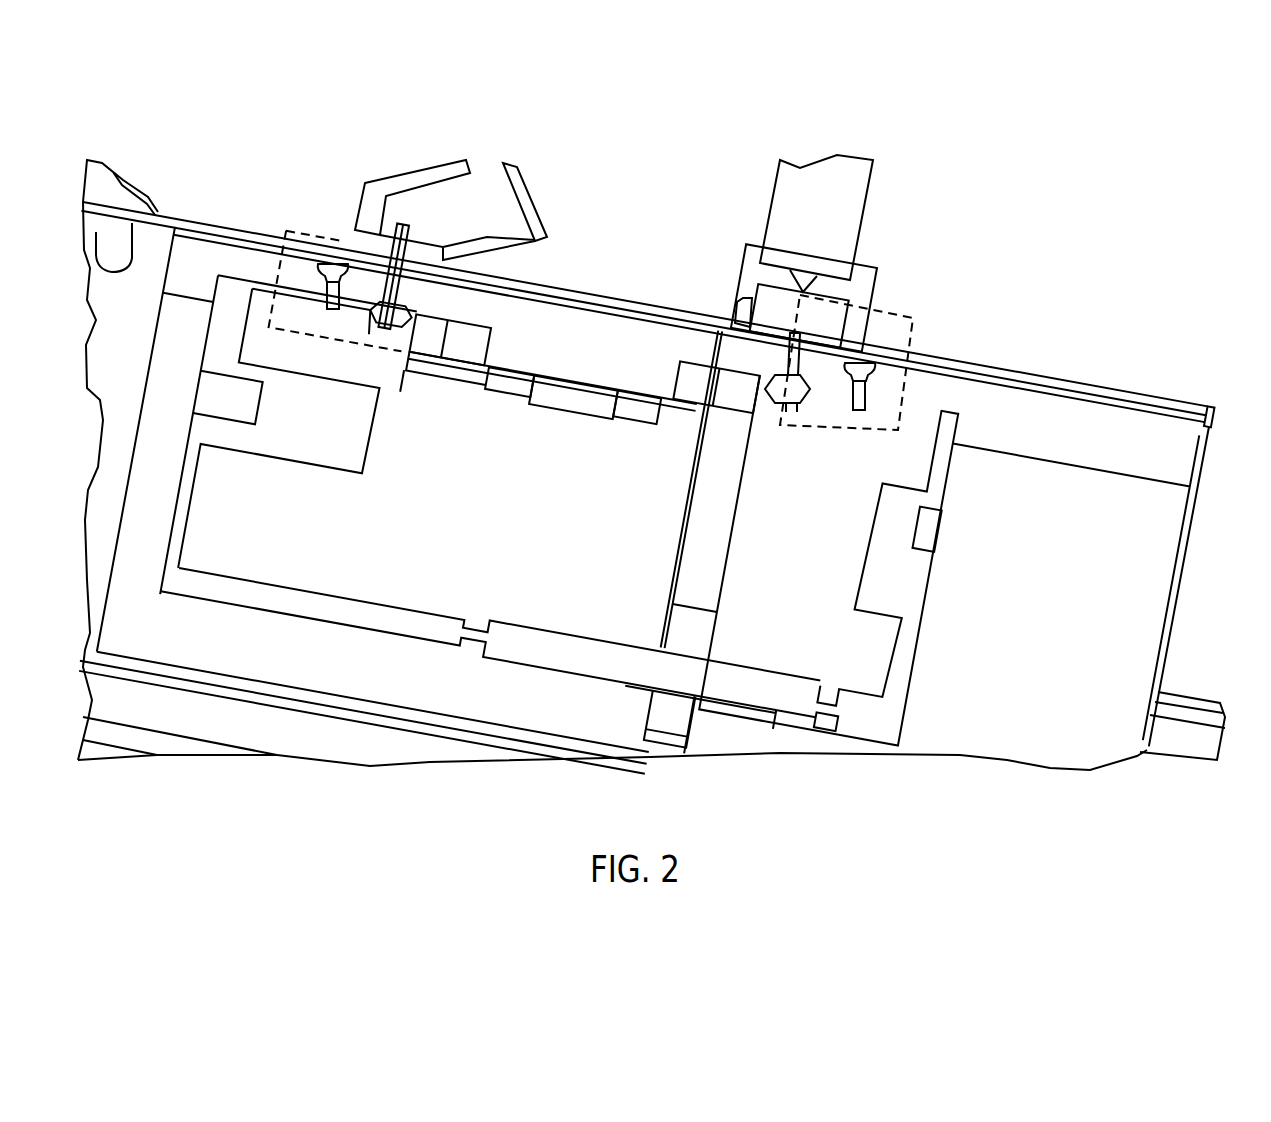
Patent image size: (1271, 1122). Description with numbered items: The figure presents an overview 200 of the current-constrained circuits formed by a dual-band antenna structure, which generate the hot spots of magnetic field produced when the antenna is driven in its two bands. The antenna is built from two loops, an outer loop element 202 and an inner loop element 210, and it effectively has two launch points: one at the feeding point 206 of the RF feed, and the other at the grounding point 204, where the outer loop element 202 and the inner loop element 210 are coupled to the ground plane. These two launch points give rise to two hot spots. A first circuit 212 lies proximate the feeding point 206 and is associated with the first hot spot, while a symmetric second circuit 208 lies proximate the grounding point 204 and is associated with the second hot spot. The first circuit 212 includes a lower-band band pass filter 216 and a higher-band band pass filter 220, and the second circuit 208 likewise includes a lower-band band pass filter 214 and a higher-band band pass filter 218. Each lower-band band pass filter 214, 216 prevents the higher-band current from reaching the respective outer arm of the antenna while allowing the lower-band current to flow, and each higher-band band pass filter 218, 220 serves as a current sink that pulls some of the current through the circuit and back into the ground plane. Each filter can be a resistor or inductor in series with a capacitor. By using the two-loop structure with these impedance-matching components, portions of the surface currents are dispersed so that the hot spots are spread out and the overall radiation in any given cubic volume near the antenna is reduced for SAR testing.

The overview 200 is at (195, 92).
The outer loop element 202 is at (388, 625).
The grounding point 204 is at (413, 303).
The feeding point 206 is at (792, 358).
The second circuit 208 is at (310, 232).
The inner loop element 210 is at (527, 370).
The first circuit 212 is at (897, 320).
The 2.4G band pass filter 214 is at (403, 365).
The 2.4G band pass filter 216 is at (768, 434).
The 5G band pass filter 218 is at (298, 272).
The 5G band pass filter 220 is at (882, 398).